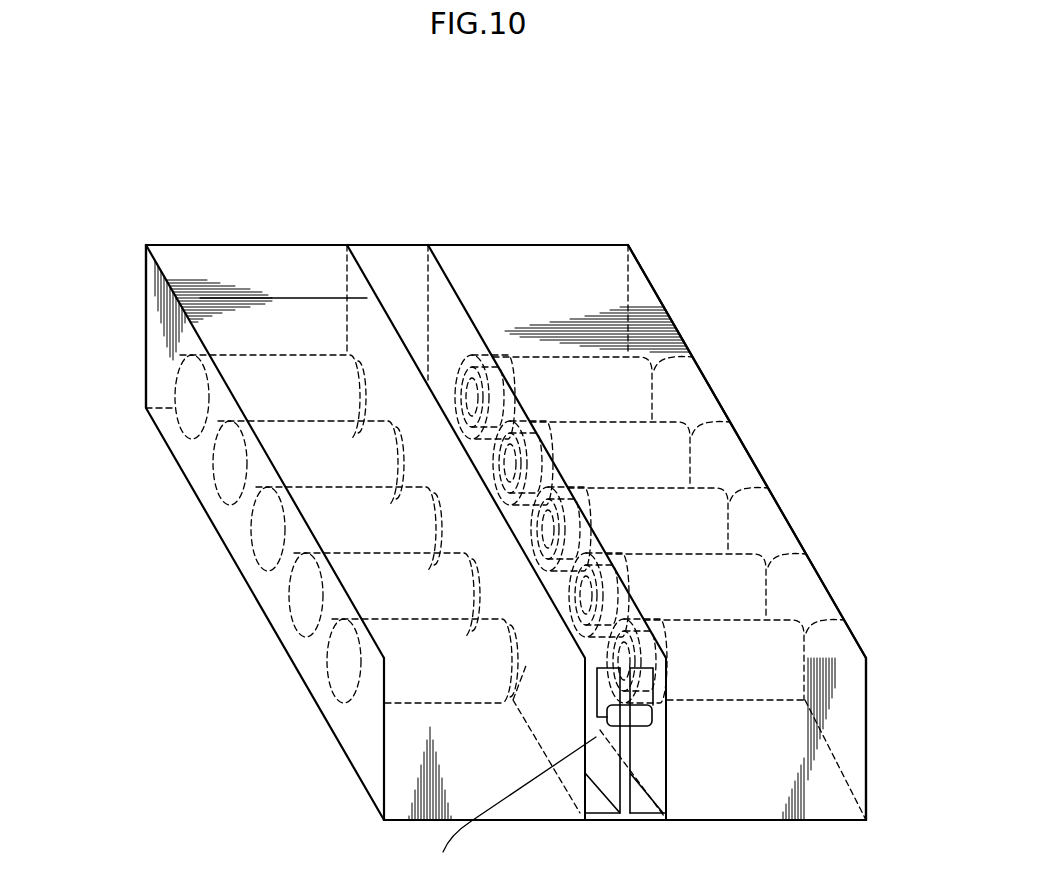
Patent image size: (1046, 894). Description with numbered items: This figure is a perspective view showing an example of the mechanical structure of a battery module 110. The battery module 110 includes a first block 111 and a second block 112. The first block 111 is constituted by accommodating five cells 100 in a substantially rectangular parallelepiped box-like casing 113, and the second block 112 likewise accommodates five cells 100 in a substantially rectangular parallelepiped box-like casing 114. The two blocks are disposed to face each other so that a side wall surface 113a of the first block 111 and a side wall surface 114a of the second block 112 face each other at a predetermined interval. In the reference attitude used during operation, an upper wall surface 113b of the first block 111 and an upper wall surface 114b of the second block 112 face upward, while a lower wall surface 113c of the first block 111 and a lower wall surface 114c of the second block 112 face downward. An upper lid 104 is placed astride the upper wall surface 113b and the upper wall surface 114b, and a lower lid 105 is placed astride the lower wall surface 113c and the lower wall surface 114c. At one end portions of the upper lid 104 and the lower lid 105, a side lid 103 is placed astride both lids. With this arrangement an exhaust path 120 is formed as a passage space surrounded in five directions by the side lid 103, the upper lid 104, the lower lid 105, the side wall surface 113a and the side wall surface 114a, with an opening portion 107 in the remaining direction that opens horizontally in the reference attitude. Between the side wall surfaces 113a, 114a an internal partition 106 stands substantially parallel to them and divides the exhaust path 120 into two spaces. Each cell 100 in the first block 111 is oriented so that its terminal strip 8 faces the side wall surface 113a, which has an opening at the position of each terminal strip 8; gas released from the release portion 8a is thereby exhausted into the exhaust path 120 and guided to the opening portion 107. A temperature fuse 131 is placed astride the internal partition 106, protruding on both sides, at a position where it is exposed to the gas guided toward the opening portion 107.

The battery module 110 is at (172, 136).
The first block 111 is at (193, 235).
The second block 112 is at (556, 229).
The casing 113 is at (146, 301).
The side wall surface 113a is at (585, 807).
The upper wall surface 113b is at (262, 270).
The lower wall surface 113c is at (410, 766).
The casing 114 is at (640, 262).
The side wall surface 114a is at (660, 775).
The upper wall surface 114b is at (497, 258).
The lower wall surface 114c is at (835, 809).
The side lid 103 is at (380, 258).
The exhaust path 120 is at (413, 283).
The cell 100 is at (692, 357).
The terminal strip 8 is at (472, 355).
The release portion 8a is at (485, 382).
The upper lid 104 is at (650, 700).
The temperature fuse 131 is at (646, 727).
The lower lid 105 is at (605, 813).
The internal partition 106 is at (640, 790).
The opening portion 107 is at (511, 806).